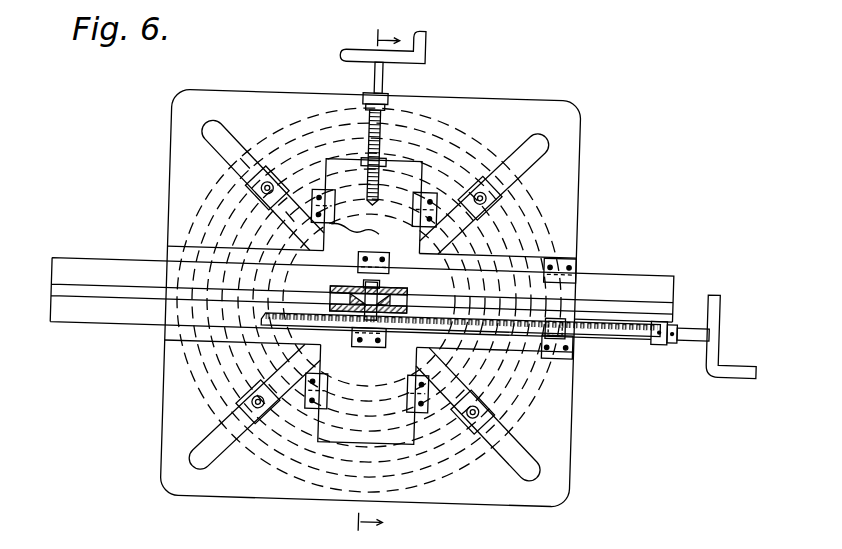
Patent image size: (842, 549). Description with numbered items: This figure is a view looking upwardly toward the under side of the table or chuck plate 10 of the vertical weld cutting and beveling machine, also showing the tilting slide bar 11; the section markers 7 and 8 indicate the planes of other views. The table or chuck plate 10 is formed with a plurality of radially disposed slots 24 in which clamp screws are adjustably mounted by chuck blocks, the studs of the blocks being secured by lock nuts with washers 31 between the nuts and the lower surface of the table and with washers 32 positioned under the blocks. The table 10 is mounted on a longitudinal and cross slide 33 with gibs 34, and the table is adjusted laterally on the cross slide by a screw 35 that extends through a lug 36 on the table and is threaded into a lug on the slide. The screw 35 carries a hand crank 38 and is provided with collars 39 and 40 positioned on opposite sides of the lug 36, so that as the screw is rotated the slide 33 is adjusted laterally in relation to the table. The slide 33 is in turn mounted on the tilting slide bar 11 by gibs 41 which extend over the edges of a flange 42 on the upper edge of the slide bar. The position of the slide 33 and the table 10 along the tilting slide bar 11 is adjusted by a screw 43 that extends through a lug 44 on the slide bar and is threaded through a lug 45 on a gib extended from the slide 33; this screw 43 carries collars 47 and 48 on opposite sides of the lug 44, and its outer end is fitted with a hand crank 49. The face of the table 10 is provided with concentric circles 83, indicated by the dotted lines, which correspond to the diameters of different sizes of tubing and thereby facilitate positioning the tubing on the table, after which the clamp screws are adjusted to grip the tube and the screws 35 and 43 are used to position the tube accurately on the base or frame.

The section line 7- 7 is at (373, 287).
The section line 8- 8 is at (269, 190).
The table or chuck plate 10 is at (167, 482).
The tilting slide bar 11 is at (606, 296).
The radially disposed slots 24 is at (528, 160).
The washers 31 is at (240, 411).
The washers 32 is at (363, 169).
The longitudinal and cross slide 33 is at (418, 158).
The gibs 34 is at (364, 285).
The screw 35 is at (364, 157).
The lug 36 is at (383, 98).
The hand crank 38 is at (419, 38).
The collar 39 is at (366, 92).
The collar 40 is at (359, 105).
The gibs 41 is at (408, 289).
The flange 42 is at (118, 332).
The screw 43 is at (640, 329).
The lug 44 is at (681, 333).
The lug 45 is at (566, 354).
The collar 47 is at (656, 337).
The collar 48 is at (674, 335).
The hand crank 49 is at (721, 300).
The concentric circles 83 is at (193, 392).